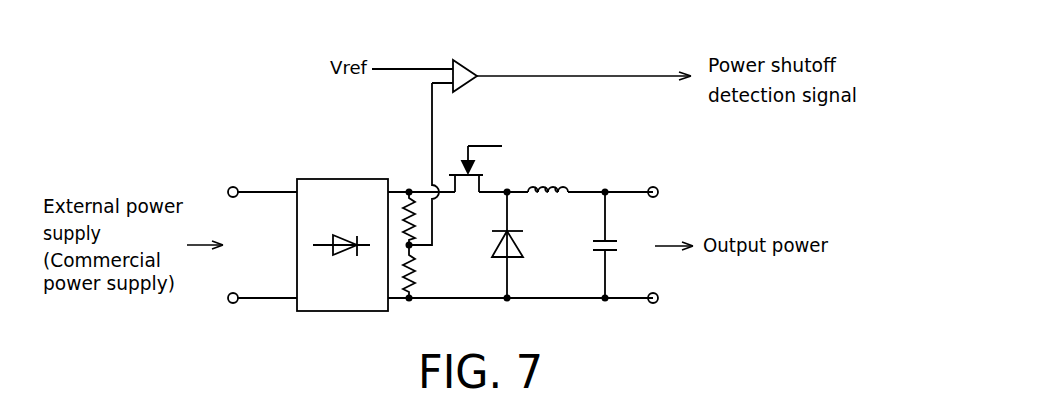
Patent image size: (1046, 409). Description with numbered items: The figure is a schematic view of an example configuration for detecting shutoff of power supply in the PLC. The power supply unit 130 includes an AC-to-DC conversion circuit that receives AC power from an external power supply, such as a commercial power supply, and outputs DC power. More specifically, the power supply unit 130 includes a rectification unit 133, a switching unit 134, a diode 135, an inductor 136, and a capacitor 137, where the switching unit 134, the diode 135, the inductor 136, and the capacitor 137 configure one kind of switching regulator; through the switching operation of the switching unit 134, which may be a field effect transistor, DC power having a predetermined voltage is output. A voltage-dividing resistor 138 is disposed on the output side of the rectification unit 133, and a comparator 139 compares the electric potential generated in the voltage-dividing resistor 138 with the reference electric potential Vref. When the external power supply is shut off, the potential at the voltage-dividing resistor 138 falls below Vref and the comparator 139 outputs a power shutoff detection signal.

The power supply unit 130 is at (683, 168).
The rectification unit 133 is at (343, 178).
The switching unit 134 is at (467, 196).
The diode 135 is at (523, 243).
The inductor 136 is at (556, 184).
The capacitor 137 is at (616, 241).
The voltage-dividing resistor 138 is at (417, 272).
The comparator 139 is at (468, 62).